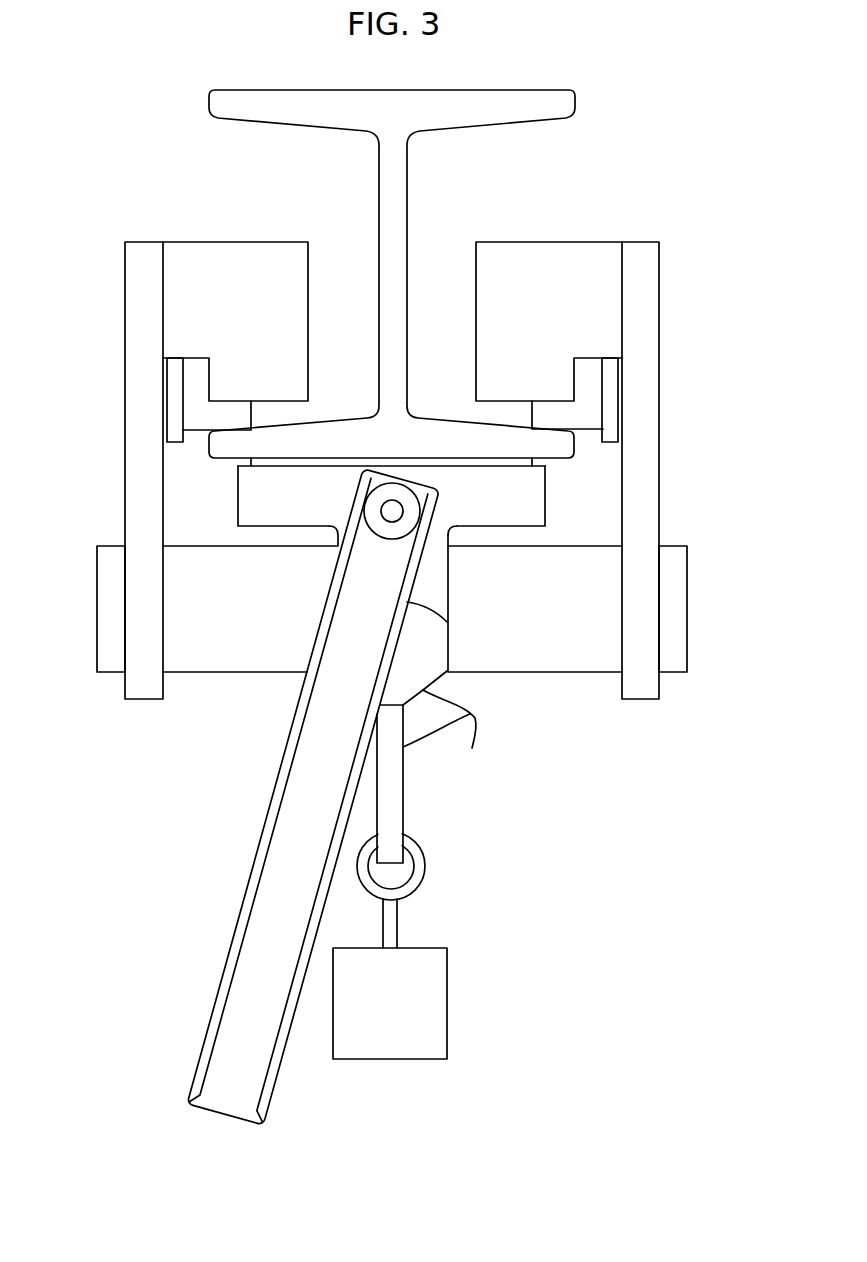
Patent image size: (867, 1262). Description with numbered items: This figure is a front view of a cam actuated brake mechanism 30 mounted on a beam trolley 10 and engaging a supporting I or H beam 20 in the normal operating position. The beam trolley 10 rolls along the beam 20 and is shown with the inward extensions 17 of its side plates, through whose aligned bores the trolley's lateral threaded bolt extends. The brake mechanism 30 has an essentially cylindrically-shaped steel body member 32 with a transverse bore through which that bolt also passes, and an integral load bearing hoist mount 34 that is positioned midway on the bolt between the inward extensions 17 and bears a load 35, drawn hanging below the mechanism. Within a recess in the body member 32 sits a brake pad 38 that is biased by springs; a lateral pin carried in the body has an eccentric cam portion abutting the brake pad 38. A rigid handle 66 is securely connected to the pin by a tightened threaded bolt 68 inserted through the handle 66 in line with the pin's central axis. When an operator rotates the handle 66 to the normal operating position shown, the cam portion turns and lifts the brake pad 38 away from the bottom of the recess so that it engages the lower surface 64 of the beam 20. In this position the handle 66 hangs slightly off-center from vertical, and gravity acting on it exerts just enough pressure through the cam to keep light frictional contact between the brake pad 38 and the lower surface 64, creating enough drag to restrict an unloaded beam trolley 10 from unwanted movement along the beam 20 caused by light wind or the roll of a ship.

The beam trolley 10 is at (669, 179).
The inward extensions 17 is at (217, 673).
The I or H beam 20 is at (408, 182).
The cam actuated brake mechanism 30 is at (250, 486).
The body member 32 is at (237, 500).
The hoist mount 34 is at (425, 775).
The load 35 is at (447, 1013).
The brake pad 38 is at (520, 467).
The lower surface 64 is at (225, 460).
The handle 66 is at (243, 900).
The threaded bolt 68 is at (420, 507).